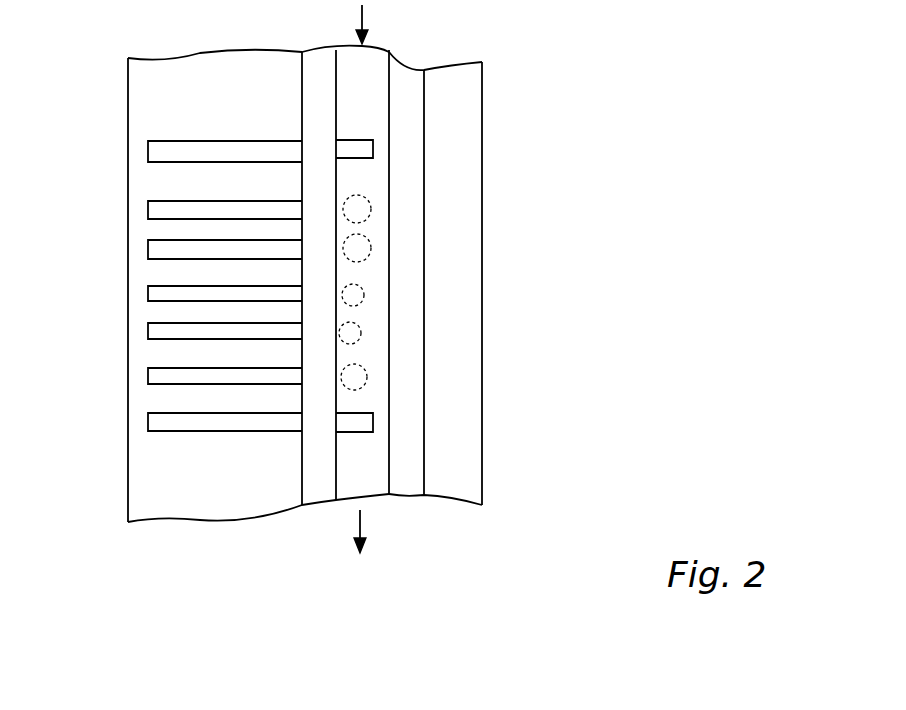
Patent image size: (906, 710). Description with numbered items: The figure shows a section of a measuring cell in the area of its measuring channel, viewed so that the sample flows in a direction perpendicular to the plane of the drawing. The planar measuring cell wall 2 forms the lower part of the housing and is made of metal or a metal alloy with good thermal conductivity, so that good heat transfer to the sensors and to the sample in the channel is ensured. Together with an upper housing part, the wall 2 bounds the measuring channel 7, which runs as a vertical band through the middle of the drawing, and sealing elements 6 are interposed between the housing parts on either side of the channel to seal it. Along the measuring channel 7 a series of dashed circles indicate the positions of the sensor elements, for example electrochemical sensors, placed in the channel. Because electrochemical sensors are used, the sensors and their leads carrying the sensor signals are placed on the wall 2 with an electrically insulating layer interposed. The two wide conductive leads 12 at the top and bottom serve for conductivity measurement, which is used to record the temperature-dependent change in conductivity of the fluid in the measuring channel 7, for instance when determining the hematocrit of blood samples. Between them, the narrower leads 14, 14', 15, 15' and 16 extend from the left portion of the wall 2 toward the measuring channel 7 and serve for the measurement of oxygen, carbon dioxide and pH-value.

The measuring cell wall 2 is at (233, 102).
The sealing elements 6 is at (413, 177).
The measuring channel 7 is at (372, 70).
The conductive leads 12 is at (158, 145).
The lead 14 is at (223, 207).
The lead 14' is at (223, 248).
The lead 15 is at (220, 294).
The lead 15' is at (218, 334).
The lead 16 is at (160, 375).